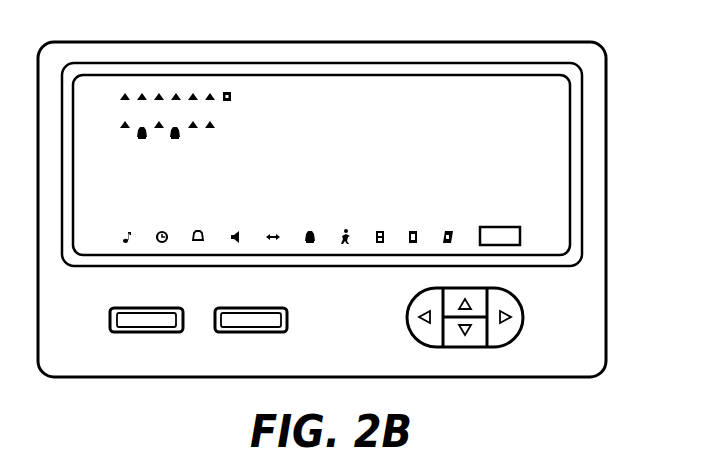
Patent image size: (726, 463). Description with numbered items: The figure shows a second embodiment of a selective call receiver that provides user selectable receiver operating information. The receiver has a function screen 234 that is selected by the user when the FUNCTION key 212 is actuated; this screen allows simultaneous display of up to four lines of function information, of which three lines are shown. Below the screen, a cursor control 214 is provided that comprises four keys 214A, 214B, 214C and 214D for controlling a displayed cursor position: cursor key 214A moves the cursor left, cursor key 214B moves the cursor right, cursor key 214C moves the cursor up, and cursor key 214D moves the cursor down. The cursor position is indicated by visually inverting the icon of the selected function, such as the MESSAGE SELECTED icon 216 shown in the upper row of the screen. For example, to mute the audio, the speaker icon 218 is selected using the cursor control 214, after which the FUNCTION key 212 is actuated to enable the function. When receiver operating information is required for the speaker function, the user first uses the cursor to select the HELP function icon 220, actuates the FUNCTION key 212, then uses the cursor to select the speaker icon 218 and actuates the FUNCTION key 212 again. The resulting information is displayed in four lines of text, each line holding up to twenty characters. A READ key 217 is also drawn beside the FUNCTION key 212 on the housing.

The FUNCTION key 212 is at (238, 336).
The cursor control 214 is at (465, 317).
The cursor key 214A is at (423, 345).
The cursor key 214B is at (515, 312).
The cursor key 214C is at (477, 291).
The cursor key 214D is at (483, 345).
The MESSAGE SELECTED icon 216 is at (227, 90).
The READ button 217 is at (153, 336).
The speaker icon 218 is at (222, 245).
The HELP function icon 220 is at (505, 227).
The function screen 234 is at (507, 143).